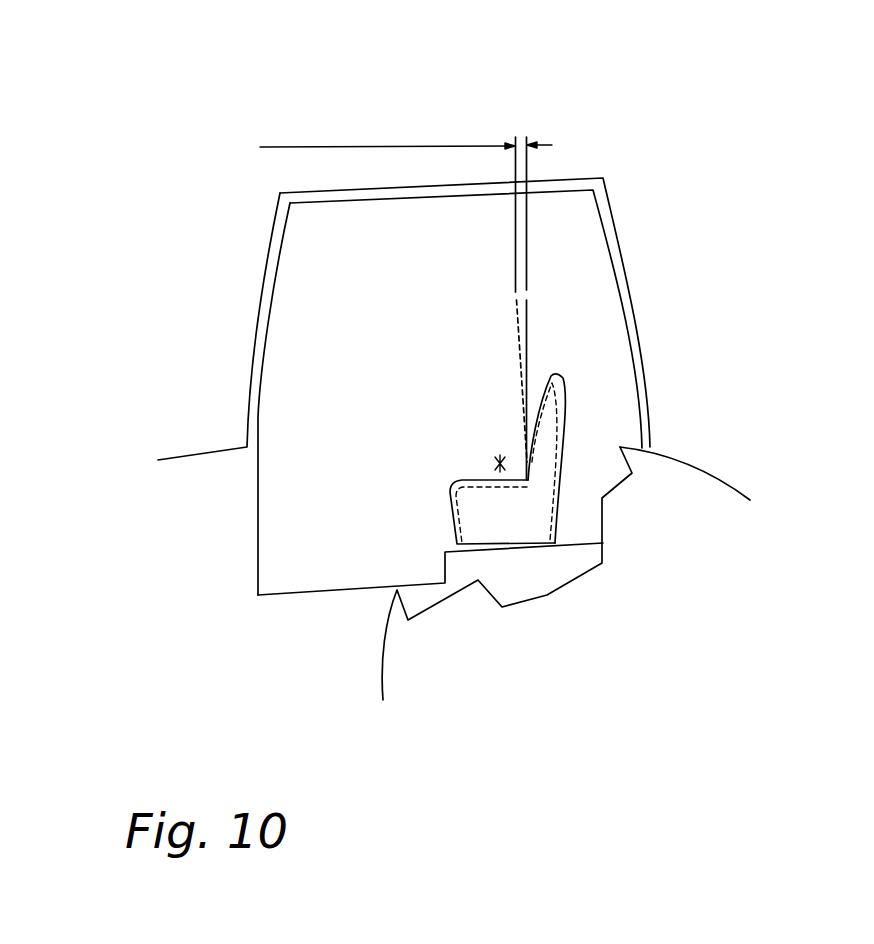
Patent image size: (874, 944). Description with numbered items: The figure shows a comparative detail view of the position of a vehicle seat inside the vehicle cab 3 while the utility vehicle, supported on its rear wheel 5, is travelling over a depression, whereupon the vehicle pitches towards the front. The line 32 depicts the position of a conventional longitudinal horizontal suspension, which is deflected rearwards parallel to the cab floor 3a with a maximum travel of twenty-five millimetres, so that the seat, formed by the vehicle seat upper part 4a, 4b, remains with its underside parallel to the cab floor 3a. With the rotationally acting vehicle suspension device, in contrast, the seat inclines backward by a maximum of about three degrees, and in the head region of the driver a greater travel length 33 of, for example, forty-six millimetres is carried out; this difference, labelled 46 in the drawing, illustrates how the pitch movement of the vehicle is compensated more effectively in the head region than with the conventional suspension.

The vehicle cab 3 is at (640, 340).
The cab floor 3a is at (342, 590).
The rear wheel 5 is at (692, 487).
The travel length 33 is at (526, 140).
The line 32 is at (530, 337).
The vehicle seat upper part 4a is at (462, 478).
The vehicle seat upper part 4b is at (568, 430).
The difference distance 46 is at (406, 134).